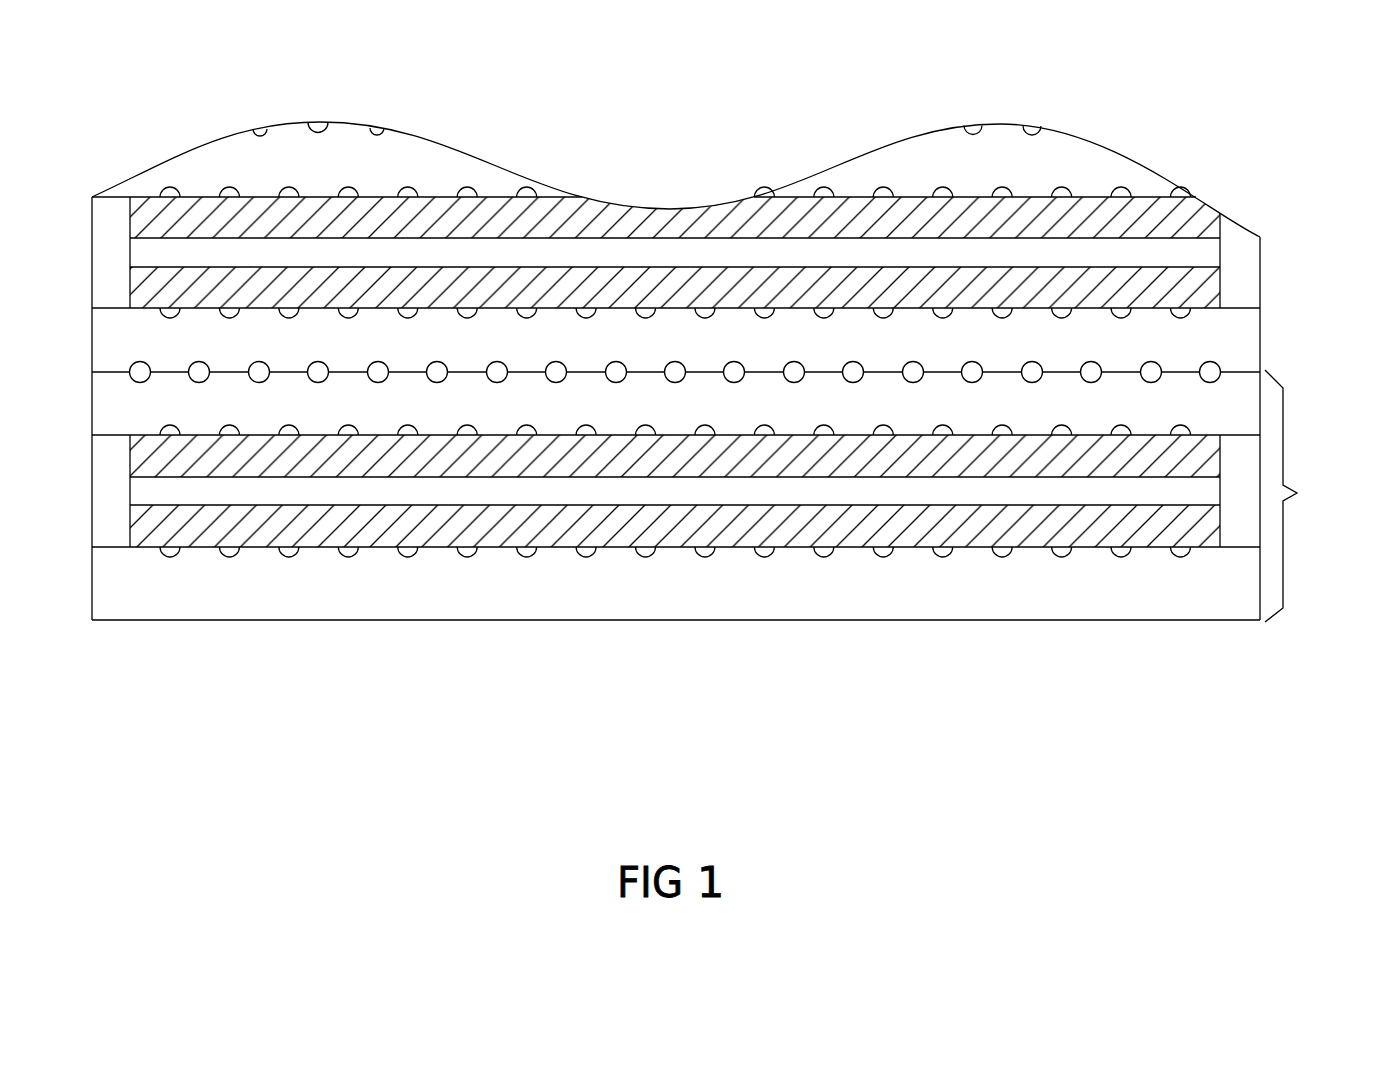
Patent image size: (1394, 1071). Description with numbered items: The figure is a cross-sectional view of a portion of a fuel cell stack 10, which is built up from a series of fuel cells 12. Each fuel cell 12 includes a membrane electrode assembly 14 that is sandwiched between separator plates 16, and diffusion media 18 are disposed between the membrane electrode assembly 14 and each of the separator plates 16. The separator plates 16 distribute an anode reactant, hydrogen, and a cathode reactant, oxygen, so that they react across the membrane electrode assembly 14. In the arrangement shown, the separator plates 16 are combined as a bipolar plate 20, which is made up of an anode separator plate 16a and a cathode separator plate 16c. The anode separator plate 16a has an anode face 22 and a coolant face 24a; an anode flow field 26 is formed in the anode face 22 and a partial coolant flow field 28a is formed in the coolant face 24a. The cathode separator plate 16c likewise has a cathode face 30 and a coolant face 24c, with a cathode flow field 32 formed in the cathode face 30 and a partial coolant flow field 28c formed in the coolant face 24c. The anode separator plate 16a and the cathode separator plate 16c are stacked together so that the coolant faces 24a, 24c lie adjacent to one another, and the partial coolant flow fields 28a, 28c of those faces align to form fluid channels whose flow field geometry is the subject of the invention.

The fuel cell stack 10 is at (1291, 131).
The fuel cell 12 is at (1299, 496).
The membrane electrode assembly 14 is at (150, 252).
The separator plate 16 is at (1222, 610).
The anode separator plate 16a is at (1255, 330).
The cathode separator plate 16c is at (117, 396).
The diffusion media 18 is at (150, 457).
The bipolar plate 20 is at (1262, 347).
The anode face 22 is at (147, 307).
The coolant face 24a is at (1186, 378).
The coolant face 24c is at (172, 366).
The anode flow field 26 is at (1120, 317).
The partial coolant flow field 28a is at (668, 361).
The partial coolant flow field 28c is at (610, 383).
The cathode face 30 is at (180, 460).
The cathode flow field 32 is at (1002, 430).